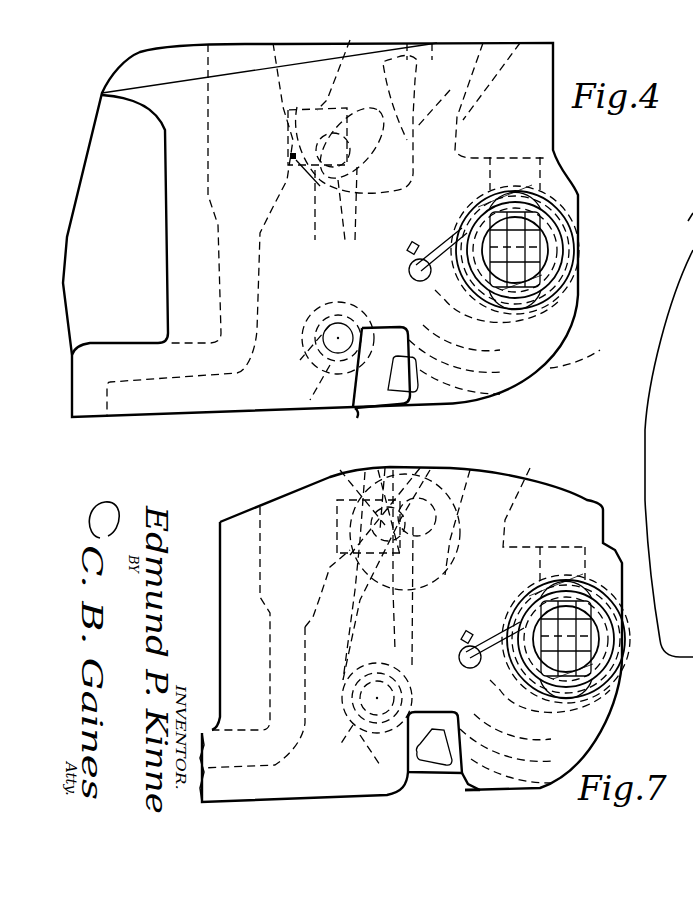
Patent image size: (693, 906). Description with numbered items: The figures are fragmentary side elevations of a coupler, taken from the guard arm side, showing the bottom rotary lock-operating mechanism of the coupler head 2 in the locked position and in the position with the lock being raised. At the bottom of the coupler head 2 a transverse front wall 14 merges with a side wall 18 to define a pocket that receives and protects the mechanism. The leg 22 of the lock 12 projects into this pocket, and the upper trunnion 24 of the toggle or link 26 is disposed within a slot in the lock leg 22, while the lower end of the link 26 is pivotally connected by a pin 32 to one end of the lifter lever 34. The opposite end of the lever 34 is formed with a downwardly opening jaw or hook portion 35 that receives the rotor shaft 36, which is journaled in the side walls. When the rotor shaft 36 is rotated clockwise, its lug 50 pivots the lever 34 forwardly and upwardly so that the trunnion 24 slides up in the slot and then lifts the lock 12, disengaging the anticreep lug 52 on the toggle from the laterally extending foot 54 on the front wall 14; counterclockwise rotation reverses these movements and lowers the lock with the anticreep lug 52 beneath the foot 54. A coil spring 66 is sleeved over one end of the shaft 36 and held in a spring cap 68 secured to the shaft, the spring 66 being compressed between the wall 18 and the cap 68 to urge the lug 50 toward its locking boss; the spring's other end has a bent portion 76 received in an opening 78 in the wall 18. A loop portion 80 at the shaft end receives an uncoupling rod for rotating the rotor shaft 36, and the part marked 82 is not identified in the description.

In FIG. 4, the coupler head 2 is at (83, 148).
In FIG. 4, the lock 12 is at (350, 48).
In FIG. 7, the lock 12 is at (438, 470).
In FIG. 4, the front wall 14 is at (228, 284).
In FIG. 7, the front wall 14 is at (278, 655).
In FIG. 4, the side wall 18 is at (540, 74).
In FIG. 7, the side wall 18 is at (595, 728).
In FIG. 4, the leg 22 is at (377, 187).
In FIG. 7, the leg 22 is at (452, 590).
In FIG. 4, the upper trunnion 24 is at (288, 156).
In FIG. 4, the toggle or link 26 is at (325, 249).
In FIG. 7, the toggle or link 26 is at (375, 630).
In FIG. 4, the pin 32 is at (318, 358).
In FIG. 7, the pin 32 is at (365, 712).
In FIG. 4, the lock-operating or lifter lever 34 is at (500, 378).
In FIG. 7, the lock-operating or lifter lever 34 is at (453, 768).
In FIG. 4, the jaw or hook portion 35 is at (575, 268).
In FIG. 7, the jaw or hook portion 35 is at (620, 672).
In FIG. 4, the rotor shaft 36 is at (470, 205).
In FIG. 7, the rotor shaft 36 is at (540, 605).
In FIG. 4, the lug 50 is at (570, 297).
In FIG. 7, the lug 50 is at (612, 695).
In FIG. 4, the anticreep lug 52 is at (290, 132).
In FIG. 7, the anticreep lug 52 is at (405, 498).
In FIG. 4, the foot 54 is at (300, 90).
In FIG. 7, the foot 54 is at (358, 490).
In FIG. 4, the coil spring 66 is at (525, 170).
In FIG. 7, the coil spring 66 is at (618, 612).
In FIG. 4, the spring cap 68 is at (490, 160).
In FIG. 4, the bent portion 76 is at (433, 238).
In FIG. 7, the bent portion 76 is at (465, 645).
In FIG. 4, the opening in the wall 78 is at (409, 268).
In FIG. 7, the opening in the wall 78 is at (460, 665).
In FIG. 4, the loop portion 80 is at (438, 292).
In FIG. 7, the loop portion 80 is at (492, 685).
In FIG. 4, the latch tip 82 is at (337, 419).